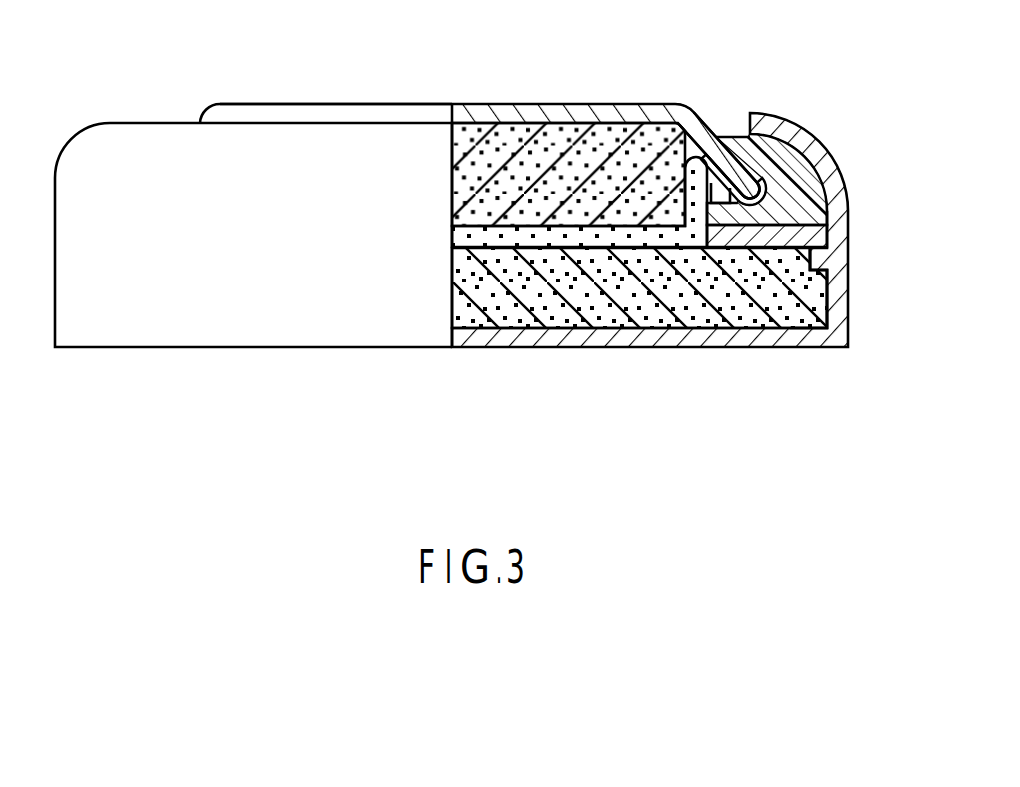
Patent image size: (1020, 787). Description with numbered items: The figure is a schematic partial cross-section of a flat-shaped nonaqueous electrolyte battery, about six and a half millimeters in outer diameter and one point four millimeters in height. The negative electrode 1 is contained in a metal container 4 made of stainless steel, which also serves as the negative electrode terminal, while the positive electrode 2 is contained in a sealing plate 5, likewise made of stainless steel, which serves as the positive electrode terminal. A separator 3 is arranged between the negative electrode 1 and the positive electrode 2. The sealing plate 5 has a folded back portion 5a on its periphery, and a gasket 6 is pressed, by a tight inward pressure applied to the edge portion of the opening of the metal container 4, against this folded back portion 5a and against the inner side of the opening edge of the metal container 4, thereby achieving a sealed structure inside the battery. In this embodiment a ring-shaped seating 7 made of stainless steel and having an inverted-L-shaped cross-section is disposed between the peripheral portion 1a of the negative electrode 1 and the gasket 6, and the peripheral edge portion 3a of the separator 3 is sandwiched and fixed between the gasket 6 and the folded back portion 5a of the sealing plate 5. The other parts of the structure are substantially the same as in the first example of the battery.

The negative electrode 1 is at (521, 318).
The peripheral portion of the negative electrode 1a is at (814, 318).
The positive electrode 2 is at (587, 150).
The separator 3 is at (653, 242).
The peripheral edge portion of the separator 3a is at (714, 134).
The metal container 4 is at (624, 348).
The sealing plate 5 is at (494, 104).
The folded back portion of the sealing plate 5a is at (738, 128).
The gasket 6 is at (793, 160).
The seating 7 is at (822, 238).